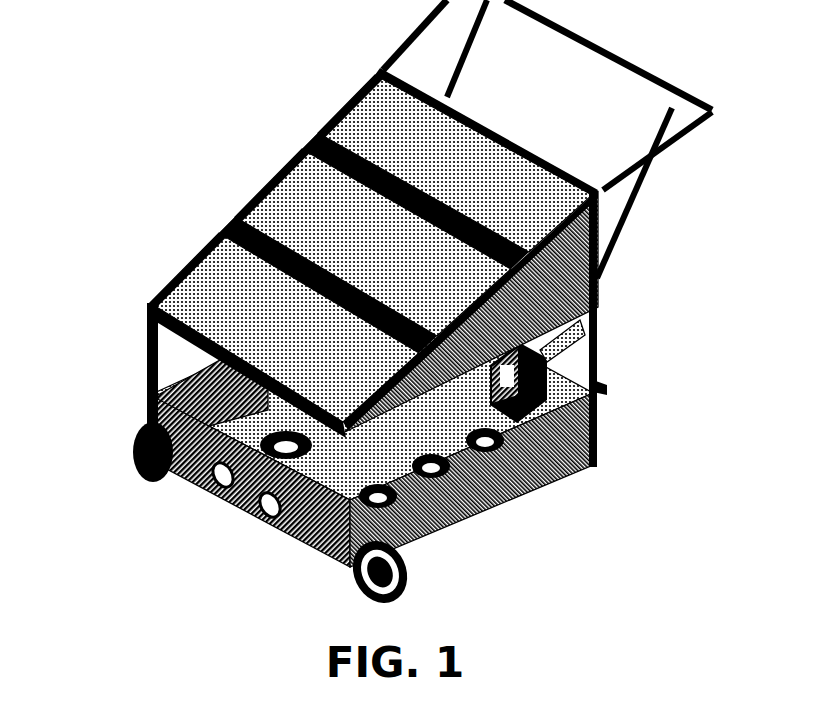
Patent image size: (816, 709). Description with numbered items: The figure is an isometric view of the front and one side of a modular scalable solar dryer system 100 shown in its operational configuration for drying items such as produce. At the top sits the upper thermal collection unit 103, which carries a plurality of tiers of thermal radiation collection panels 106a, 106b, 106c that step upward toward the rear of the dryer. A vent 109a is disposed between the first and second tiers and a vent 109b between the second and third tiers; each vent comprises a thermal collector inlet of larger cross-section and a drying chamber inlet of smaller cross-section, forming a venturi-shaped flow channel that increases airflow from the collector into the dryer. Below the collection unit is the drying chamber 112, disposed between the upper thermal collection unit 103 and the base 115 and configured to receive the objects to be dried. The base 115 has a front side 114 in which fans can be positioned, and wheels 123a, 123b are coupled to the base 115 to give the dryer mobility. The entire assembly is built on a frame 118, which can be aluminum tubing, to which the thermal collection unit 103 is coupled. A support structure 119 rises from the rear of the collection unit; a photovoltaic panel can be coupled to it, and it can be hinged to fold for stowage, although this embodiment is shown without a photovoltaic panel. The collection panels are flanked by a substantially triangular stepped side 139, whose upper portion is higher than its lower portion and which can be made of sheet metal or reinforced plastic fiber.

The solar dryer system 100 is at (306, 50).
The upper thermal collection unit 103 is at (655, 237).
The thermal radiation collection panel 106a is at (284, 327).
The thermal radiation collection panel 106b is at (373, 242).
The thermal radiation collection panel 106c is at (455, 163).
The vent 109a is at (228, 226).
The vent 109b is at (314, 145).
The drying chamber 112 is at (585, 356).
The front side 114 is at (252, 508).
The base 115 is at (615, 443).
The frame 118 is at (147, 384).
The support structure 119 is at (688, 100).
The wheel 123a is at (408, 575).
The wheel 123b is at (135, 455).
The substantially triangular stepped side 139 is at (471, 312).